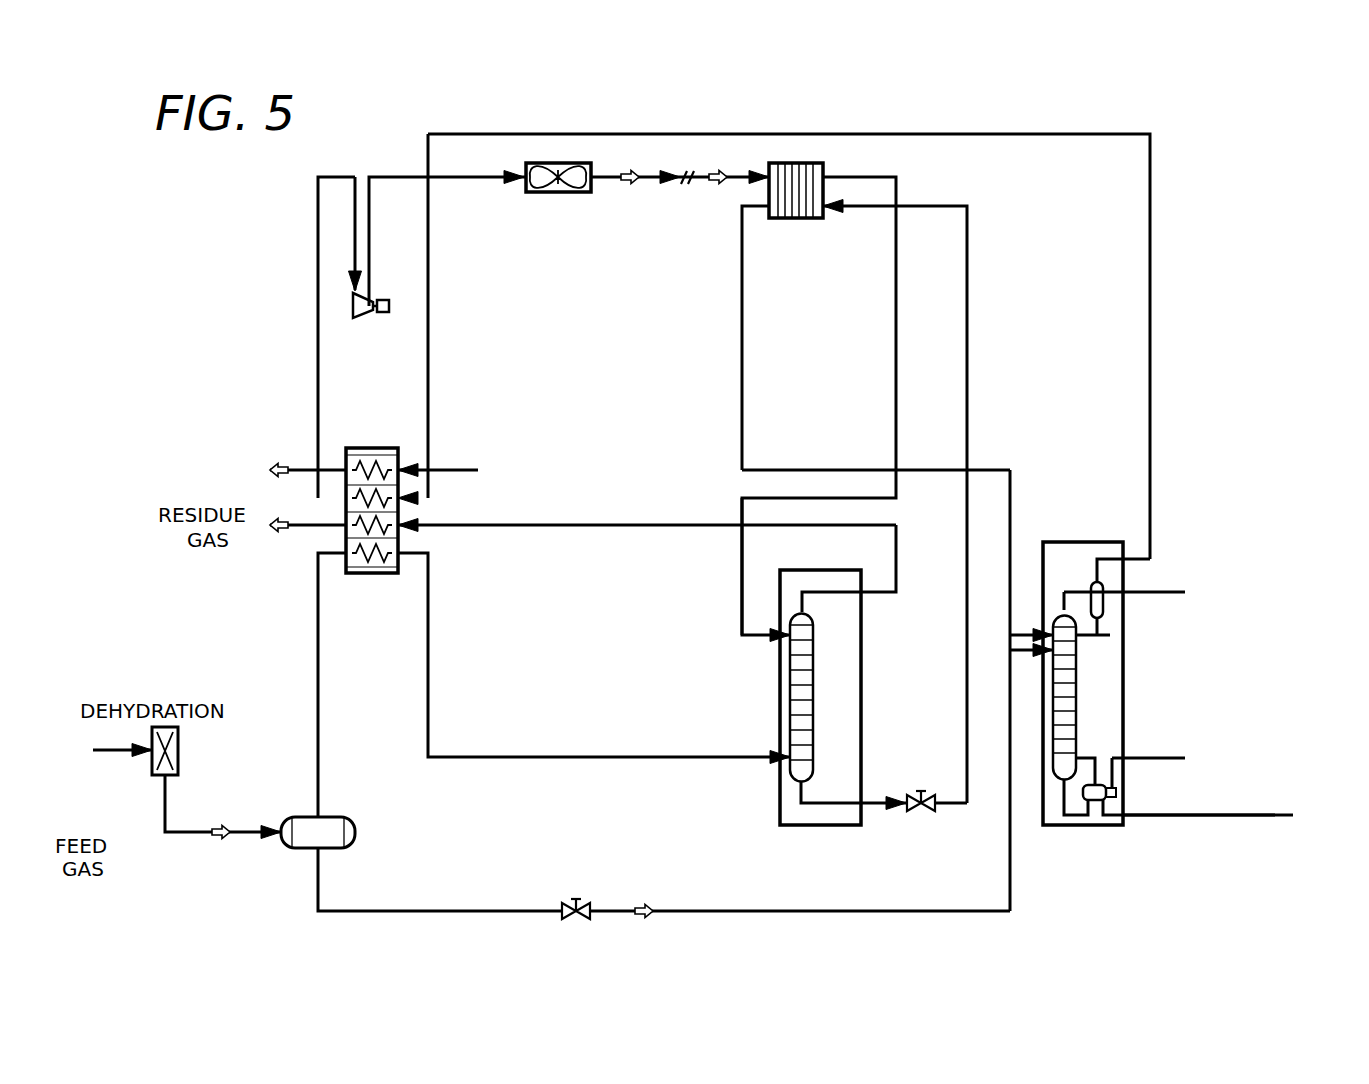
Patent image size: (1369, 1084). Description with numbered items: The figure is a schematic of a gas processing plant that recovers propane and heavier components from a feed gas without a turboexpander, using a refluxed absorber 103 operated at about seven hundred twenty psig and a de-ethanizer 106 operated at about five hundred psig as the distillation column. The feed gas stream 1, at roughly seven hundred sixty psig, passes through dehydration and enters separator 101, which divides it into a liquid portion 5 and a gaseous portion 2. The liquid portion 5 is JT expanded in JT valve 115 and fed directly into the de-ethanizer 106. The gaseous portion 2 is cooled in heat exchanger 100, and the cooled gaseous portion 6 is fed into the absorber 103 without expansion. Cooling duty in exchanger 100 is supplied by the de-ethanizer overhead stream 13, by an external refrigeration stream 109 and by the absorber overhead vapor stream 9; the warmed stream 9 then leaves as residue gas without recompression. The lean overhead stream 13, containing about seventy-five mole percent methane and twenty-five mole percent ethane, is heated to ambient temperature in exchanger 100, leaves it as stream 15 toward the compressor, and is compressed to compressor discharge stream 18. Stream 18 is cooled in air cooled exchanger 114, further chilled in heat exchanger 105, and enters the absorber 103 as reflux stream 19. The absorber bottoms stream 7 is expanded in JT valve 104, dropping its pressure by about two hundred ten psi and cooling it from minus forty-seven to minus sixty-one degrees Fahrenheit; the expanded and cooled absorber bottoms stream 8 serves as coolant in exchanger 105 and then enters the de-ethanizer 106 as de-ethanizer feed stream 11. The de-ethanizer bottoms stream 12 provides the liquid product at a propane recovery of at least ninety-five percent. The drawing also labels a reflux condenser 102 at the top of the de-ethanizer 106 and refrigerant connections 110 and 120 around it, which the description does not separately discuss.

The feed gas stream 1 is at (88, 758).
The gaseous portion 2 is at (310, 654).
The liquid portion 5 is at (506, 903).
The cooled gaseous portion 6 is at (590, 750).
The absorber bottoms stream 7 is at (833, 811).
The expanded and cooled absorber bottoms stream 8 is at (958, 663).
The absorber overhead vapor stream 9 is at (633, 516).
The de-ethanizer feed stream 11 is at (828, 462).
The de-ethanizer bottoms stream 12 is at (1285, 823).
The de-ethanizer overhead stream 13 is at (1046, 143).
The compressor inlet stream 15 is at (312, 211).
The compressor discharge stream 18 is at (466, 187).
The reflux stream 19 is at (733, 582).
The heat exchanger 100 is at (378, 576).
The separator 101 is at (358, 832).
The reflux condenser 102 is at (1105, 605).
The refluxed absorber 103 is at (780, 692).
The JT valve 104 is at (921, 790).
The heat exchanger 105 is at (800, 222).
The de-ethanizer 106 is at (1080, 828).
The external refrigeration stream 109 is at (470, 462).
The refrigerant side stream 110 is at (1178, 750).
The air cooled exchanger 114 is at (557, 195).
The JT valve 115 is at (576, 896).
The refrigerant stream 120 is at (1170, 585).